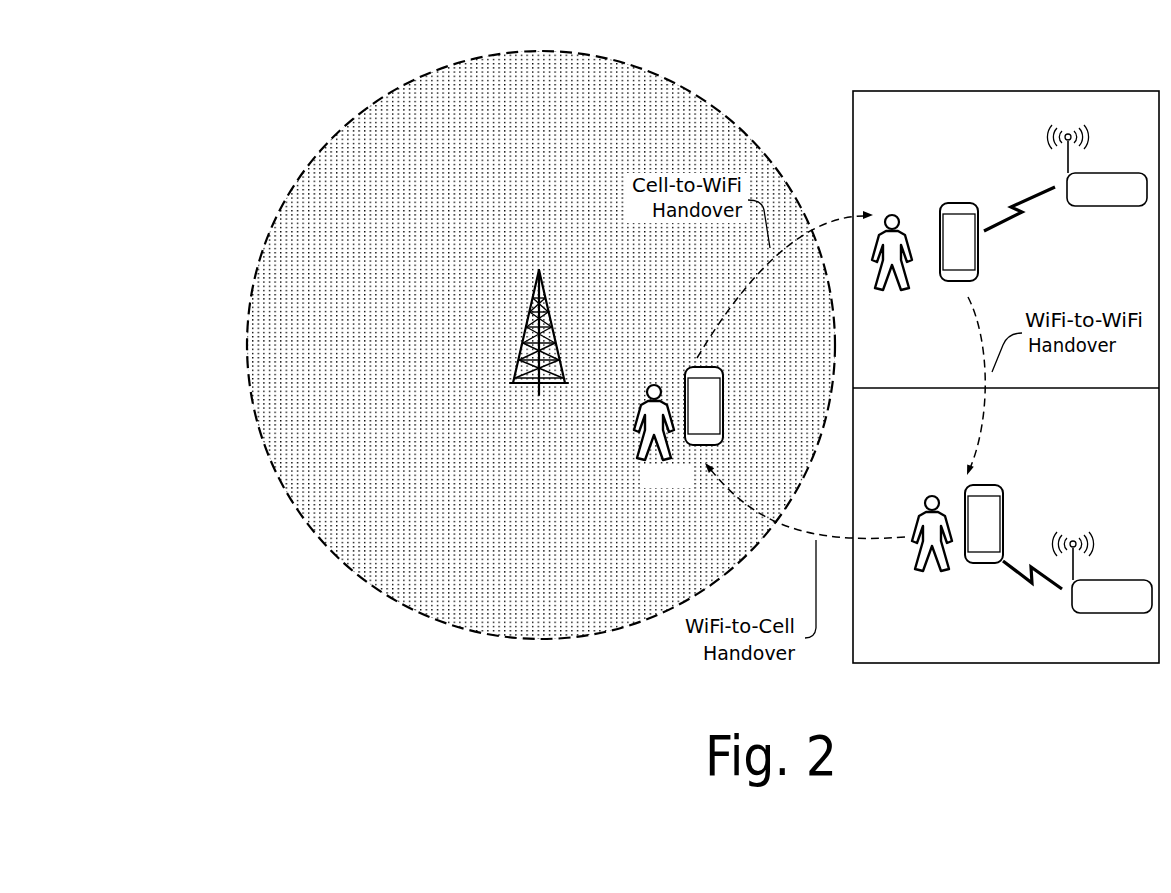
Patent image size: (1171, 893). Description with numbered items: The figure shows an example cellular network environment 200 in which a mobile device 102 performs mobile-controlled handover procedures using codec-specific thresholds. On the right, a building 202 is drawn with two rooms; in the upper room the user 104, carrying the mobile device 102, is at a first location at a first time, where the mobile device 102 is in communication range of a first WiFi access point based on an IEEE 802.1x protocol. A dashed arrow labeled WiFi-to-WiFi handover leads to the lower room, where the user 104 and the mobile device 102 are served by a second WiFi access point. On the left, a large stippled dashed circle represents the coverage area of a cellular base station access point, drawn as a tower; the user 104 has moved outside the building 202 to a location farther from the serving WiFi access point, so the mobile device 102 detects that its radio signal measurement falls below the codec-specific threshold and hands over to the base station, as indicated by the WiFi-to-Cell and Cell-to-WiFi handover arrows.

The cellular network environment 200 is at (240, 55).
The building 202 is at (862, 90).
The mobile device 102 is at (722, 368).
The user 104 is at (665, 395).